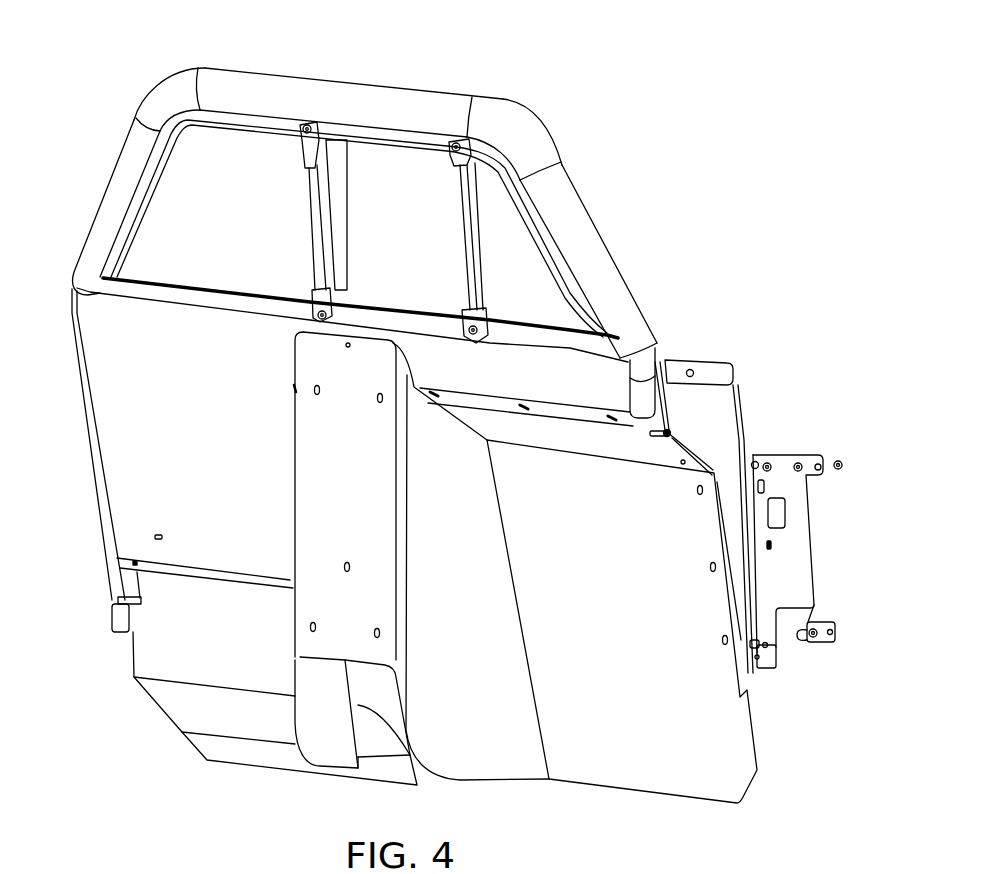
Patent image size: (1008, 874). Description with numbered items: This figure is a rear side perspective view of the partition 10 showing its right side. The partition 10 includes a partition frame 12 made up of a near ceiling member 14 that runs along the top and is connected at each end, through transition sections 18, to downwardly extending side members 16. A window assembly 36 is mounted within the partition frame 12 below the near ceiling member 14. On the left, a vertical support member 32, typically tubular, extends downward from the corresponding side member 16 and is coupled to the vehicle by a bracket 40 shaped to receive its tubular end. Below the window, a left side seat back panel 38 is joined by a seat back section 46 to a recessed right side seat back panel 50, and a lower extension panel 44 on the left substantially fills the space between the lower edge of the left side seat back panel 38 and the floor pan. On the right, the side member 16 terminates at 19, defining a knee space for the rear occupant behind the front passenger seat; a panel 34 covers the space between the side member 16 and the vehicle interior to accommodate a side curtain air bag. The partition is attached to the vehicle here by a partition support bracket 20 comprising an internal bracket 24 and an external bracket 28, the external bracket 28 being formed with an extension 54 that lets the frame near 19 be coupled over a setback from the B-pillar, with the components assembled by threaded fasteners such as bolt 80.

The partition 10 is at (660, 135).
The partition frame 12 is at (430, 83).
The near ceiling member 14 is at (395, 87).
The side members 16 is at (110, 168).
The transition sections 18 is at (178, 68).
The termination of the side member 19 is at (676, 428).
The partition support bracket 20 is at (821, 371).
The internal bracket 24 is at (773, 453).
The external bracket 28 is at (745, 440).
The vertical support member 32 is at (102, 528).
The panels 34 is at (737, 377).
The window assembly 36 is at (216, 284).
The left side seat back panel 38 is at (108, 387).
The bracket 40 is at (112, 618).
The lower extension panel 44 is at (172, 703).
The seat back section 46 is at (460, 781).
The recessed right side seat back panel 50 is at (750, 747).
The extension 54 is at (651, 431).
The bolt 80 is at (839, 472).